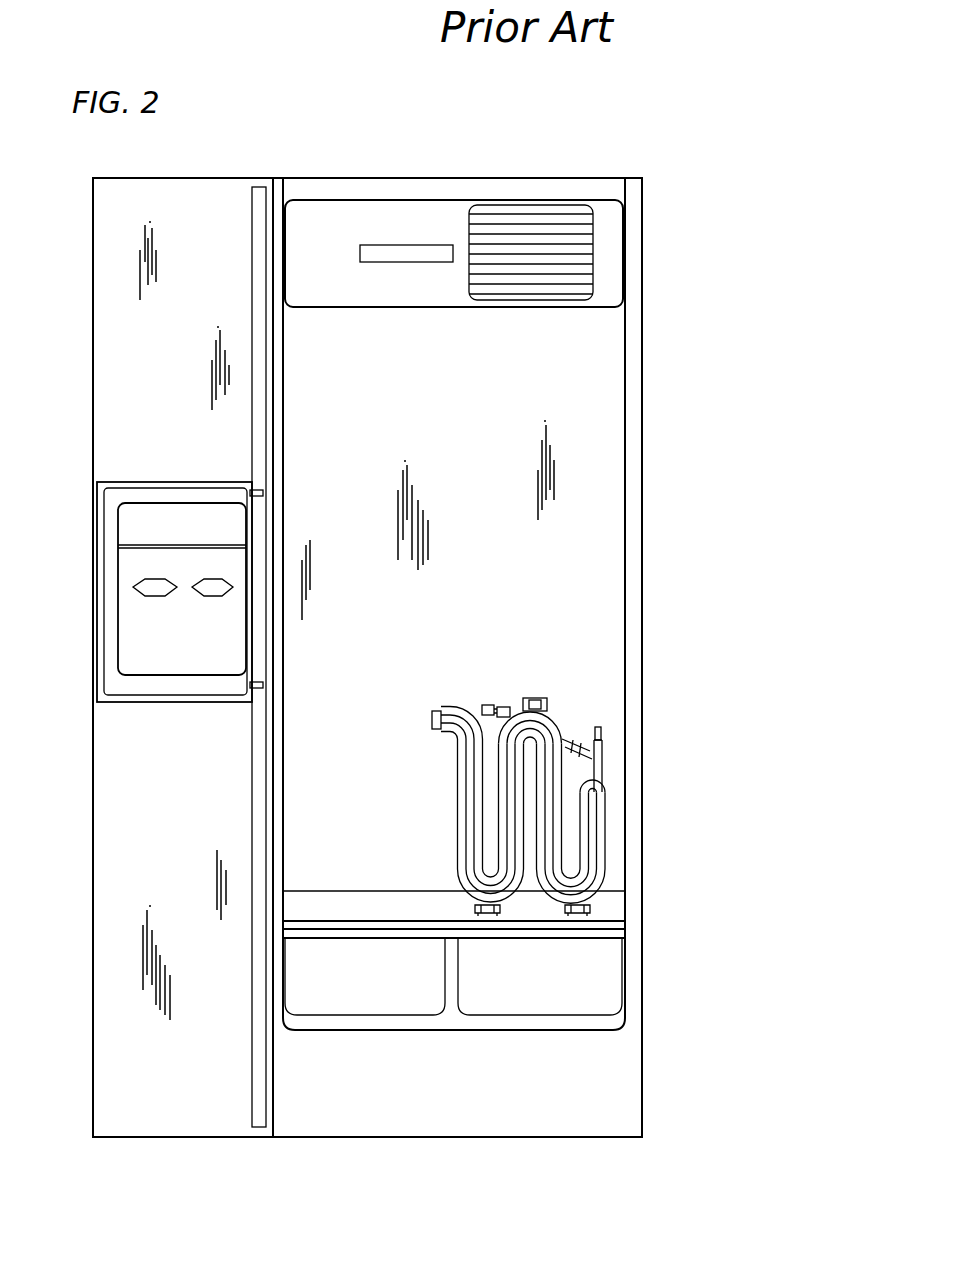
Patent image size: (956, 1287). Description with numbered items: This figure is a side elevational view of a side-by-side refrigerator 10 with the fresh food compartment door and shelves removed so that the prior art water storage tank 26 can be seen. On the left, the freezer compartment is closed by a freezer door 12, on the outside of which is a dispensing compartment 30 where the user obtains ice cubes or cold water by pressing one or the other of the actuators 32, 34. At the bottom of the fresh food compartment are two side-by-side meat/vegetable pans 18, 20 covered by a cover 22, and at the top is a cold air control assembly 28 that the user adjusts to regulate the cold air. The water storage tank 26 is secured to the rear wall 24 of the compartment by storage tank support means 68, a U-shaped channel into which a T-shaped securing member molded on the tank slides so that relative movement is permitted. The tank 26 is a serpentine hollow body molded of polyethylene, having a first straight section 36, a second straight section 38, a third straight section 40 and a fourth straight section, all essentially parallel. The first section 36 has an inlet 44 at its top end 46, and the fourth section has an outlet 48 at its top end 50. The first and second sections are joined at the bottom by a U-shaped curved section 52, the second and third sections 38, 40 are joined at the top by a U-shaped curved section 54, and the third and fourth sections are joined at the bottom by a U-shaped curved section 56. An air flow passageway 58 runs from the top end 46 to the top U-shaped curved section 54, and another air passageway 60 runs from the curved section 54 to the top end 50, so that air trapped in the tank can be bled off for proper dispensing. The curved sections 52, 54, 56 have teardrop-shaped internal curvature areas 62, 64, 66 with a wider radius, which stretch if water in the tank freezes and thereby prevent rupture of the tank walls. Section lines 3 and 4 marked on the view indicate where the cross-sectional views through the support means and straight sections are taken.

The refrigerator 10 is at (325, 167).
The freezer door 12 is at (186, 389).
The pan 18 is at (374, 985).
The pan 20 is at (522, 993).
The cover 22 is at (318, 918).
The rear wall 24 is at (342, 767).
The water storage tank 26 is at (454, 802).
The cold air control assembly 28 is at (470, 325).
The dispensing compartment 30 is at (178, 662).
The actuator 32 is at (175, 587).
The actuator 34 is at (207, 594).
The first straight section 36 is at (593, 803).
The second straight section 38 is at (548, 773).
The third straight section 40 is at (508, 765).
The inlet 44 is at (601, 733).
The top end 46 is at (602, 760).
The outlet 48 is at (433, 720).
The top end 50 is at (464, 708).
The U-shaped curved section 52 is at (577, 893).
The U-shaped curved section 54 is at (538, 720).
The U-shaped curved section 56 is at (478, 892).
The air flow passageway 58 is at (590, 740).
The air passageway 60 is at (483, 705).
The internal curvature area 62 is at (578, 873).
The internal curvature area 64 is at (528, 765).
The internal curvature area 66 is at (483, 870).
The storage tank support means 68 is at (528, 695).
The section line 3- 3 is at (600, 632).
The section line 4- 4 is at (433, 866).